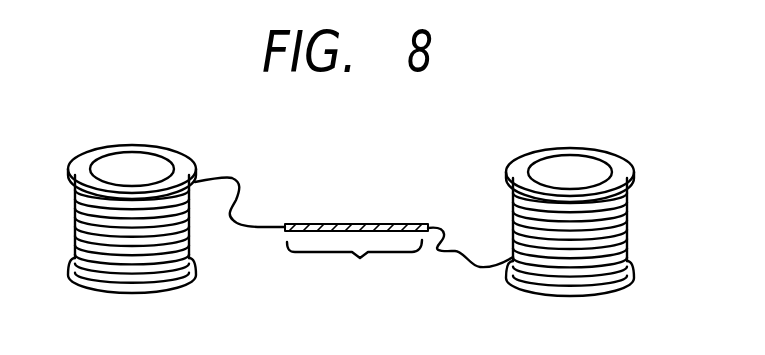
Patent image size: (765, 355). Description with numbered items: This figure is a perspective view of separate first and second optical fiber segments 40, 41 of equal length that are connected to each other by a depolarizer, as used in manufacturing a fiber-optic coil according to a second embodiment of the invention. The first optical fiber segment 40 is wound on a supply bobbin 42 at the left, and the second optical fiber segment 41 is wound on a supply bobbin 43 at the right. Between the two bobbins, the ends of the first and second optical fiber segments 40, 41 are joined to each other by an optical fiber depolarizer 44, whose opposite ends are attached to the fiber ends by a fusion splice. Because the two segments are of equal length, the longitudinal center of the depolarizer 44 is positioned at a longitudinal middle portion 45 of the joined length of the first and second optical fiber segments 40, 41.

The first optical fiber segment 40 is at (220, 178).
The second optical fiber segment 41 is at (457, 250).
The supply bobbin 42 is at (136, 146).
The supply bobbin 43 is at (594, 152).
The optical fiber depolarizer 44 is at (354, 267).
The longitudinal middle portion 45 is at (352, 222).